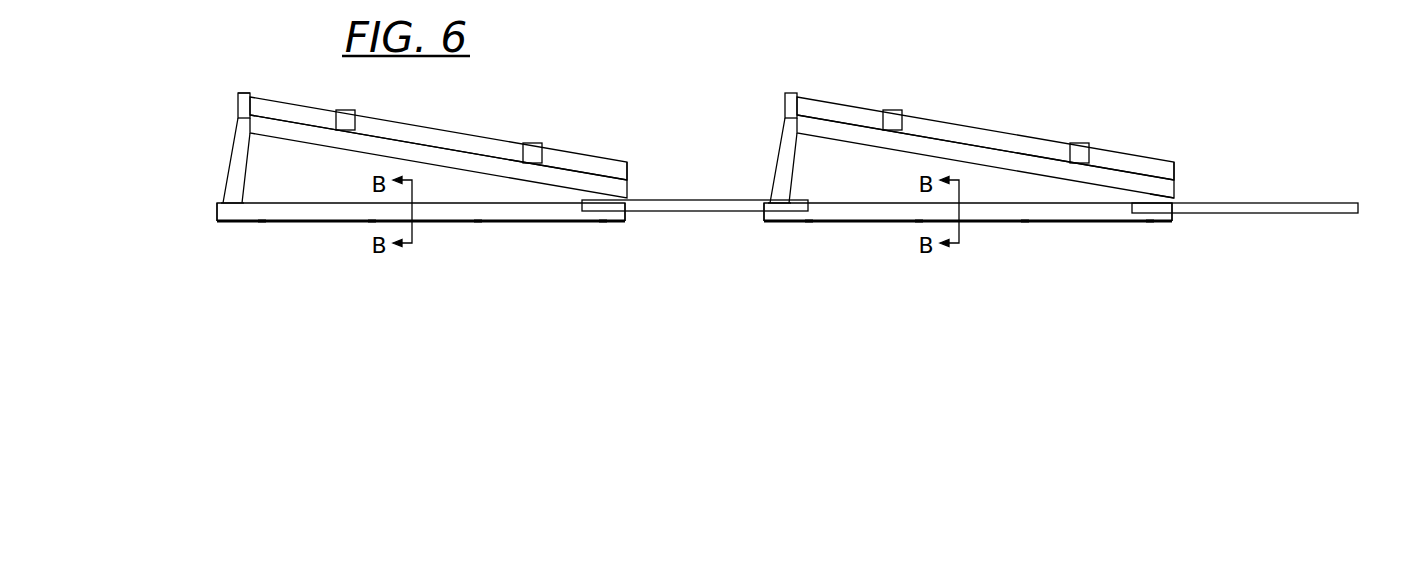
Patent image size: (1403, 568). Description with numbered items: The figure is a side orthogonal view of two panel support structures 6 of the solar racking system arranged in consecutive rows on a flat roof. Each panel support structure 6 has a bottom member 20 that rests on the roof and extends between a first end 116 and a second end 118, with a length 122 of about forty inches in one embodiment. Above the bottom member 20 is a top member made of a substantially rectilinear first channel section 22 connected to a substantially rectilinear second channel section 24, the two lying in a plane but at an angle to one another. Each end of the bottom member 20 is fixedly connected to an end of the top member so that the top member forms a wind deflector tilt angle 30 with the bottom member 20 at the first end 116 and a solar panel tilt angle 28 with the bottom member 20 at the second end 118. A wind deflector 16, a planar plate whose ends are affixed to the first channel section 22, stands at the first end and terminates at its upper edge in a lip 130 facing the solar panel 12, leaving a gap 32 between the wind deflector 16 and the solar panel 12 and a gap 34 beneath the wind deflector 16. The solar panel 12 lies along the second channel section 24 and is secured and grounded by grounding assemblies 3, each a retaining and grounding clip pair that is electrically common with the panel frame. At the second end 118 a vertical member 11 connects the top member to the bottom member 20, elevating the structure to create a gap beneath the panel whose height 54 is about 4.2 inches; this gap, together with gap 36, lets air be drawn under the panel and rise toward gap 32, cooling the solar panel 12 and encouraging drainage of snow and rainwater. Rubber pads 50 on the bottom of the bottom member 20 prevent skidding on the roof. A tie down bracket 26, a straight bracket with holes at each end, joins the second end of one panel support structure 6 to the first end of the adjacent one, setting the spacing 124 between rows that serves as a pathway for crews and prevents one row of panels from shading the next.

The grounding assembly 3 is at (345, 110).
The panel support structure 6 is at (517, 83).
The vertical member 11 is at (1162, 198).
The solar panel 12 is at (455, 132).
The wind deflector 16 is at (238, 101).
The bottom member 20 is at (541, 222).
The first channel section 22 is at (238, 140).
The second channel section 24 is at (386, 137).
The tie down bracket 26 is at (656, 200).
The solar panel tilt angle 28 is at (458, 169).
The wind deflector tilt angle 30 is at (250, 173).
The gap 32 is at (250, 95).
The gap 34 is at (223, 198).
The gap 36 is at (322, 190).
The rubber pad 50 is at (262, 224).
The height 54 is at (1193, 221).
The first end 116 is at (214, 225).
The second end 118 is at (640, 223).
The length 122 is at (217, 205).
The spacing 124 is at (764, 281).
The lip 130 is at (240, 92).